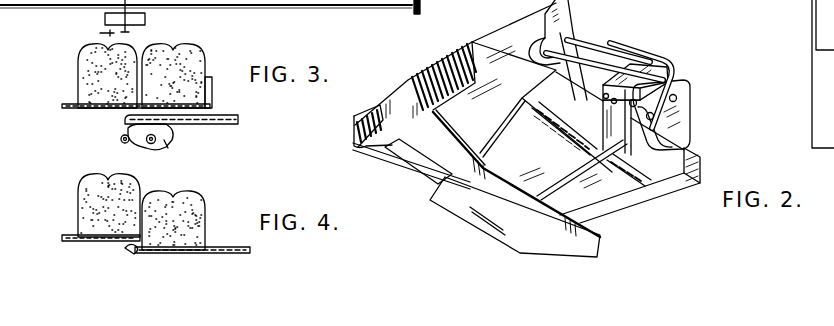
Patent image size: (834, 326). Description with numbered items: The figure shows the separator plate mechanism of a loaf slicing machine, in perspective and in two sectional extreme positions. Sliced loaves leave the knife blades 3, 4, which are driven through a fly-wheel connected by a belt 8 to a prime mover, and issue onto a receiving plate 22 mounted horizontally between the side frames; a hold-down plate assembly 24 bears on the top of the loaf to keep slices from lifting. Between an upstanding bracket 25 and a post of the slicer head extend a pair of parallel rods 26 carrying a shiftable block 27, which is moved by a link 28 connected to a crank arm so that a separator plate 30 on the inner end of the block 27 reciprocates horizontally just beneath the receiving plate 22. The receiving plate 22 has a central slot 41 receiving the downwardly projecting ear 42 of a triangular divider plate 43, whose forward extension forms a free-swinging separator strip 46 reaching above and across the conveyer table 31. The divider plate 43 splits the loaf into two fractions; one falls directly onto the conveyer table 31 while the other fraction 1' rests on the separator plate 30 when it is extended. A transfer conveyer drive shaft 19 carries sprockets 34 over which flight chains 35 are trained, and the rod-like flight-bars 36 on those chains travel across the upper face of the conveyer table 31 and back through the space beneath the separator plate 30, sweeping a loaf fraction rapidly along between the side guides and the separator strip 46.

In FIG. 2, the knife blades 3 is at (440, 48).
In FIG. 2, the knife blades 4 is at (417, 54).
In FIG. 3, the belt 8 is at (112, 22).
In FIG. 3, the transfer conveyer drive shaft 19 is at (156, 148).
In FIG. 3, the receiving plate 22 is at (62, 108).
In FIG. 4, the receiving plate 22 is at (68, 232).
In FIG. 2, the receiving plate 22 is at (478, 118).
In FIG. 2, the hold-down plate assembly 24 is at (692, 78).
In FIG. 2, the upstanding bracket 25 is at (686, 121).
In FIG. 2, the parallel rods 26 is at (570, 40).
In FIG. 2, the shiftable block 27 is at (668, 68).
In FIG. 2, the link 28 is at (635, 53).
In FIG. 3, the separator plate 30 is at (206, 108).
In FIG. 4, the separator plate 30 is at (76, 243).
In FIG. 2, the separator plate 30 is at (578, 166).
In FIG. 3, the conveyer table 31 is at (238, 119).
In FIG. 4, the conveyer table 31 is at (250, 250).
In FIG. 2, the conveyer table 31 is at (628, 195).
In FIG. 3, the sprockets 34 is at (173, 143).
In FIG. 3, the flight chains 35 is at (232, 126).
In FIG. 4, the flight chains 35 is at (222, 247).
In FIG. 2, the flight chains 35 is at (676, 182).
In FIG. 3, the flight-bars 36 is at (118, 140).
In FIG. 4, the flight-bars 36 is at (126, 250).
In FIG. 2, the slot or aperture 41 is at (378, 160).
In FIG. 2, the downwardly projecting ear 42 is at (393, 166).
In FIG. 2, the divider plate 43 is at (440, 145).
In FIG. 2, the separator strip 46 is at (605, 240).
In FIG. 3, the loaf fraction 1' is at (155, 76).
In FIG. 4, the loaf fraction 1' is at (155, 212).